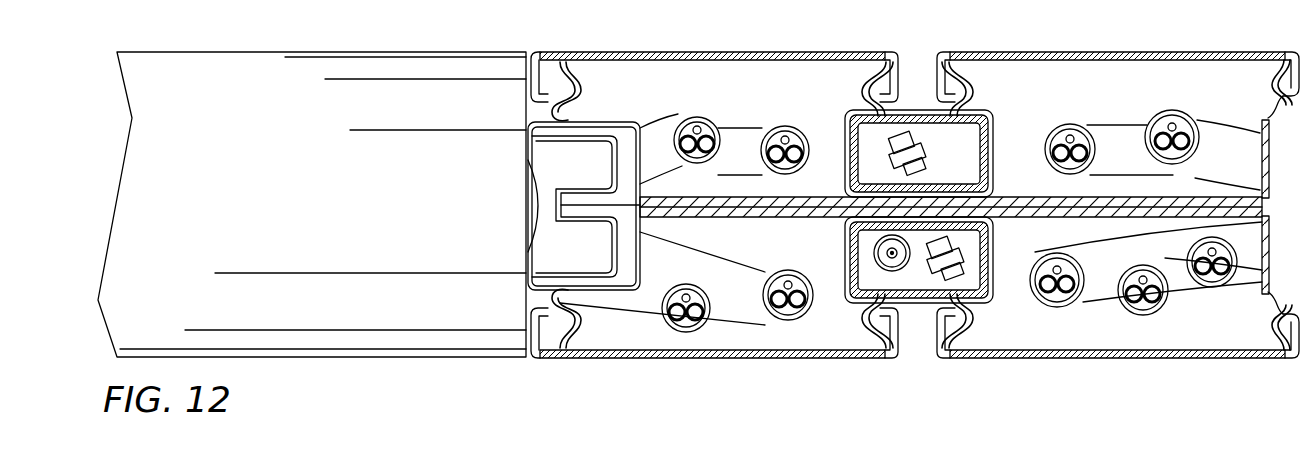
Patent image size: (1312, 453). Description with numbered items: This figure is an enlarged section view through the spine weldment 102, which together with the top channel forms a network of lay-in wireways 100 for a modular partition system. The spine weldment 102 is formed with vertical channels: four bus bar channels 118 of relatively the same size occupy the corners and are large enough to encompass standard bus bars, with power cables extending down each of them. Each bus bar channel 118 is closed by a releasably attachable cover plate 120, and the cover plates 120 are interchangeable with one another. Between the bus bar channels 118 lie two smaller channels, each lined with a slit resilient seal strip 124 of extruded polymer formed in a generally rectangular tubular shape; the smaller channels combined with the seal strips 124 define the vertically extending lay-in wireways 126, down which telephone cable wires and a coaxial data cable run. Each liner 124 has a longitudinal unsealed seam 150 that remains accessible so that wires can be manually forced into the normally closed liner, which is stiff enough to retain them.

The lay-in wireways 100 is at (352, 378).
The spine weldment 102 is at (1272, 157).
The bus bar channels 118 is at (781, 80).
The cover plate 120 is at (677, 354).
The seal strip 124 is at (903, 110).
The lay-in wireways 126 is at (972, 162).
The unsealed seam 150 is at (922, 112).